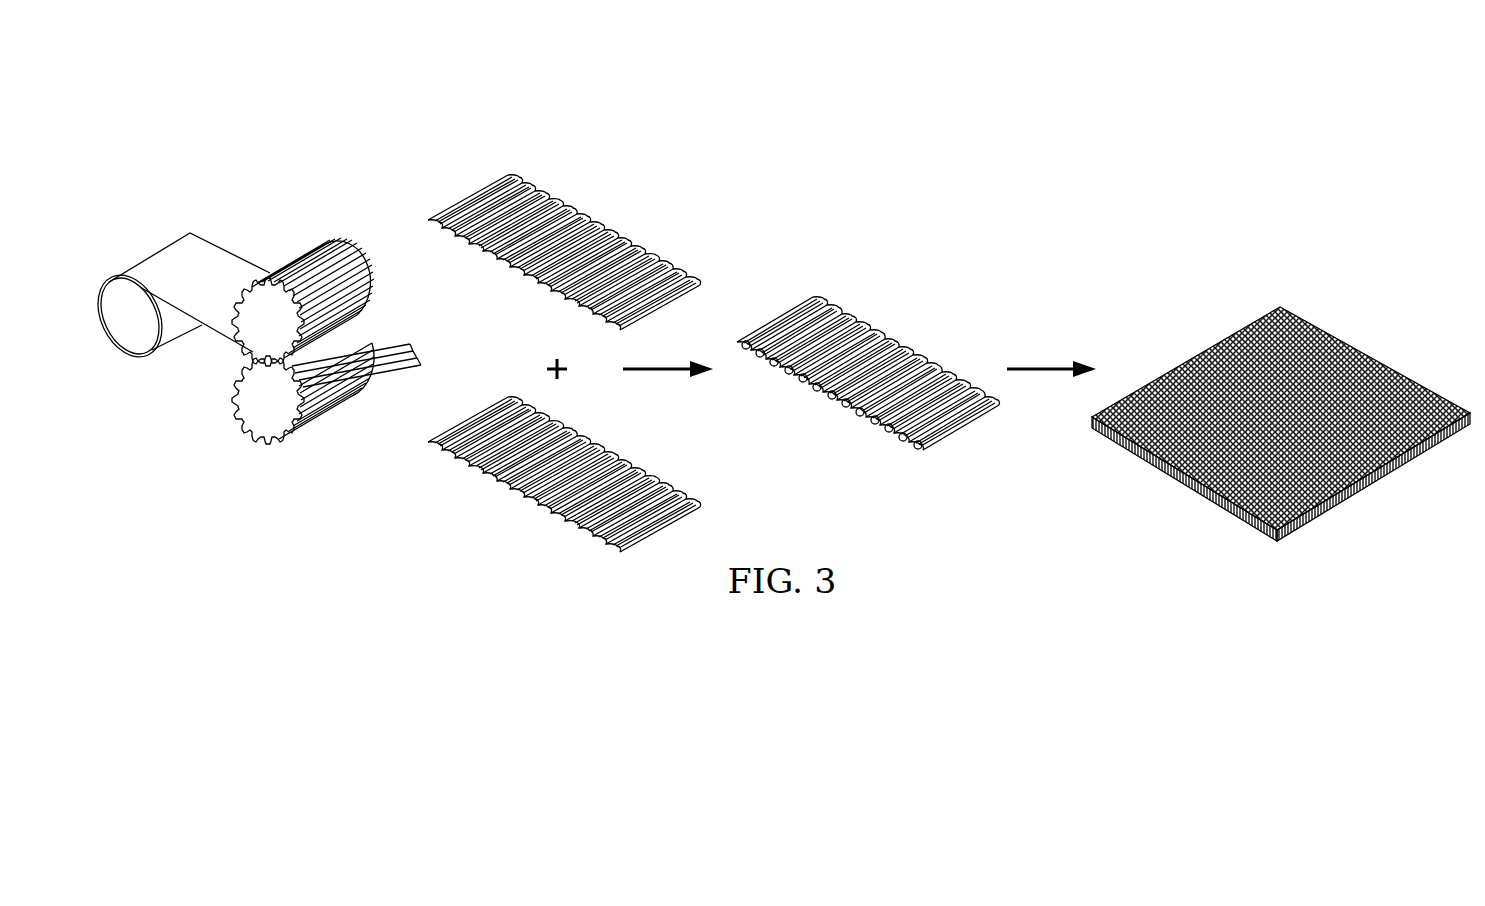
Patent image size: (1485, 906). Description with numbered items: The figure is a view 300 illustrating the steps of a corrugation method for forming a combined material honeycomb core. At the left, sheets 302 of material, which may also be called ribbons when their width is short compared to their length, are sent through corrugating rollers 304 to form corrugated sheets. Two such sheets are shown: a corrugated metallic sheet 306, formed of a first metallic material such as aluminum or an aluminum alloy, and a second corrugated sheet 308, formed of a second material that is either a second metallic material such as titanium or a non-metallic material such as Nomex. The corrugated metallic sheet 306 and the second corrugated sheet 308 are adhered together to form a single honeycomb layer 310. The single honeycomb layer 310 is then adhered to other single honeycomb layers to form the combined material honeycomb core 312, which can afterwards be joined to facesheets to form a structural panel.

The view 300 is at (918, 86).
The sheets 302 is at (228, 250).
The corrugating rollers 304 is at (344, 241).
The corrugated metallic sheet 306 is at (602, 207).
The second corrugated sheet 308 is at (511, 506).
The single honeycomb layer 310 is at (909, 318).
The combined material honeycomb core 312 is at (1371, 318).